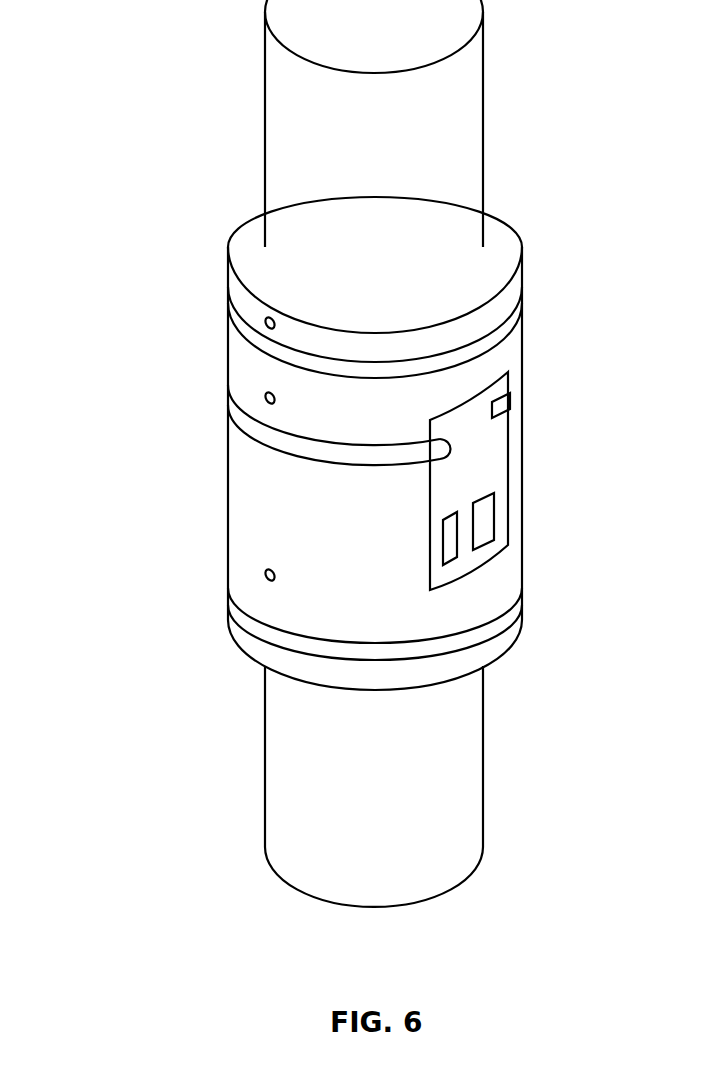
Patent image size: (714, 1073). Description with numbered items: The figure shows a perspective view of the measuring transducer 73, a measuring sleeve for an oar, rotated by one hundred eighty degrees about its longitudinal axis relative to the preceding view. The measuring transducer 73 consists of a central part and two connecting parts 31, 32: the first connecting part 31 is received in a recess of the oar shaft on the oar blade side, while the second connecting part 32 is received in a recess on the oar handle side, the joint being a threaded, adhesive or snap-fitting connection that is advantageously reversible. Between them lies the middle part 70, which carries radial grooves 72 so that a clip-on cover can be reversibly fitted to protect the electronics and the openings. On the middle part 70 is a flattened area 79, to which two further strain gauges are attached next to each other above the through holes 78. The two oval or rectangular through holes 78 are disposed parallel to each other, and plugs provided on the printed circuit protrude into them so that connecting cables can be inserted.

The first connecting part 31 is at (460, 768).
The second connecting part 32 is at (467, 168).
The middle part 70 is at (517, 348).
The radial grooves 72 is at (278, 632).
The measuring transducer 73 is at (172, 388).
The through holes 78 is at (455, 555).
The flattened area 79 is at (478, 462).